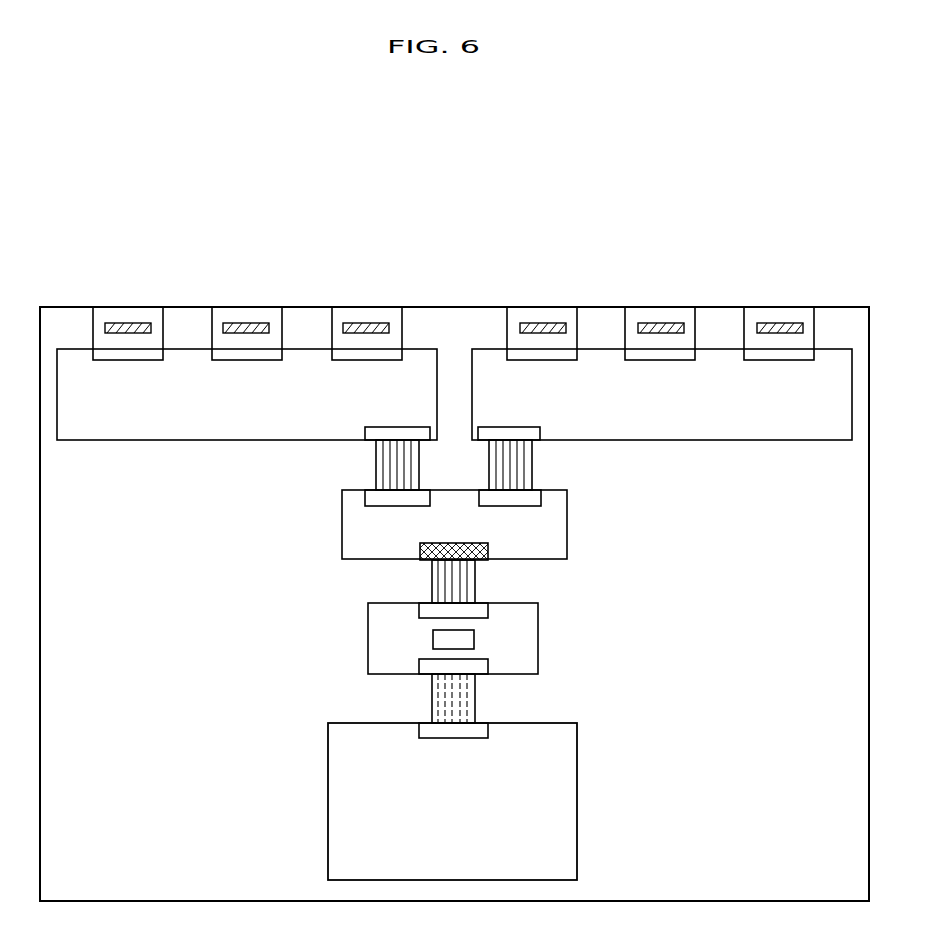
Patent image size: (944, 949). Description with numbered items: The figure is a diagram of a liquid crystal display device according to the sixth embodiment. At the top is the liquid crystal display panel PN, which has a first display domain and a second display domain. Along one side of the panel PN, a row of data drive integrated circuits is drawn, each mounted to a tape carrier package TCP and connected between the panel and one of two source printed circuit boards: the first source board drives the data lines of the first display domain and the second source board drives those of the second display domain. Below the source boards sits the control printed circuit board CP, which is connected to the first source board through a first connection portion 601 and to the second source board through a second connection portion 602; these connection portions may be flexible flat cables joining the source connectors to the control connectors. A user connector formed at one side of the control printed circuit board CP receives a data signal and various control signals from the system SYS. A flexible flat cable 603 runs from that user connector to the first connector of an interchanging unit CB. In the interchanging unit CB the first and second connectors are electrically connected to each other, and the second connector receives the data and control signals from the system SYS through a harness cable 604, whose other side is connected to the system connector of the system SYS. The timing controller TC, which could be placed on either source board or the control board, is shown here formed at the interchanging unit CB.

The liquid crystal display panel PN is at (838, 307).
The tape carrier package TCP is at (93, 318).
The first connection portion 601 is at (376, 465).
The second connection portion 602 is at (533, 466).
The control printed circuit board CP is at (567, 540).
The flexible flat cable 603 is at (477, 580).
The interchanging unit CB is at (538, 607).
The timing controller TC is at (474, 640).
The harness cable 604 is at (477, 698).
The system SYS is at (577, 802).